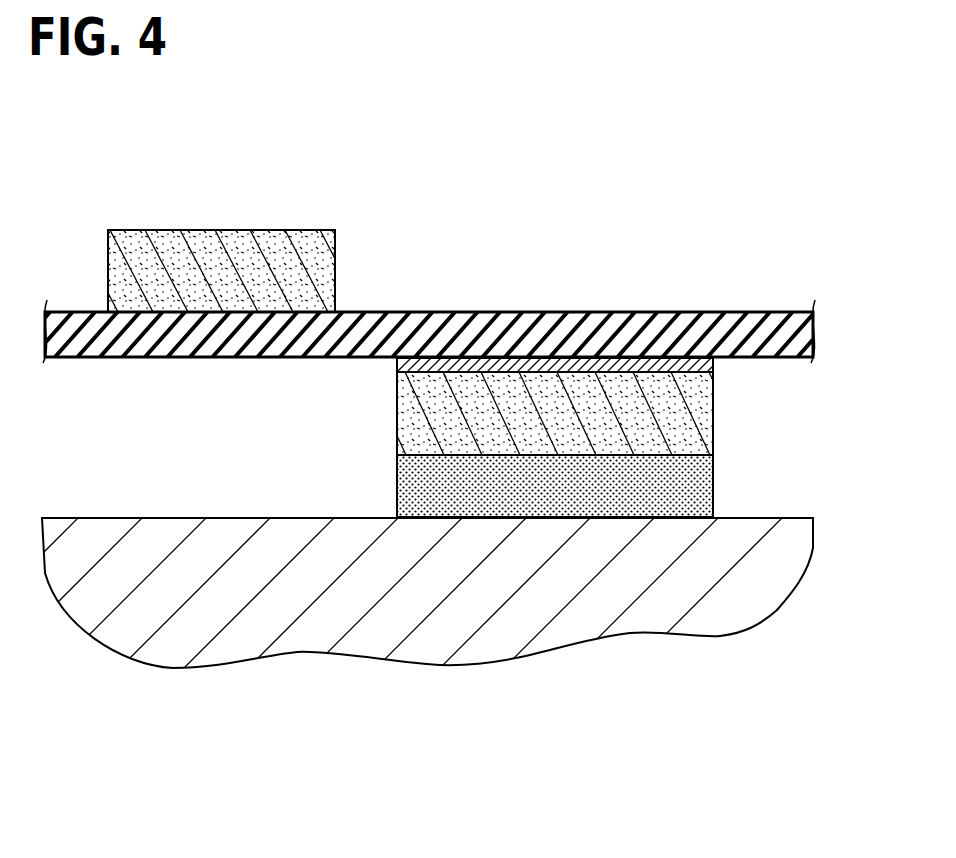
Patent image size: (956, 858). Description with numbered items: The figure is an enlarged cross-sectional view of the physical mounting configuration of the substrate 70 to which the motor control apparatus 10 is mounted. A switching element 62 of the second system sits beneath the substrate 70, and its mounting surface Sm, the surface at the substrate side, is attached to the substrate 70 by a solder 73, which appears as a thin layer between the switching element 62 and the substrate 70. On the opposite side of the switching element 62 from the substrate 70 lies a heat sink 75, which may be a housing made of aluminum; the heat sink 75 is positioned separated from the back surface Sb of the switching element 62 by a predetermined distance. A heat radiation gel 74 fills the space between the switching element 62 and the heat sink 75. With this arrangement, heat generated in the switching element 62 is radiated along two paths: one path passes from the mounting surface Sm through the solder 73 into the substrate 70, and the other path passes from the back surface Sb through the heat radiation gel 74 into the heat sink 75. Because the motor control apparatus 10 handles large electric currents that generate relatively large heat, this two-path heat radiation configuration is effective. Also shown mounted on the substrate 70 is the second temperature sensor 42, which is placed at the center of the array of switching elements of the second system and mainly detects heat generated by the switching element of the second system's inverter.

The motor control apparatus 10 is at (610, 253).
The second temperature sensor 42 is at (188, 240).
The substrate 70 is at (675, 327).
The solder 73 is at (697, 365).
The switching elements of the second system 62 is at (698, 412).
The heat radiation gel 74 is at (697, 479).
The heat sink 75 is at (652, 615).
The mounting surface Sm is at (519, 362).
The back surface Sb is at (467, 457).